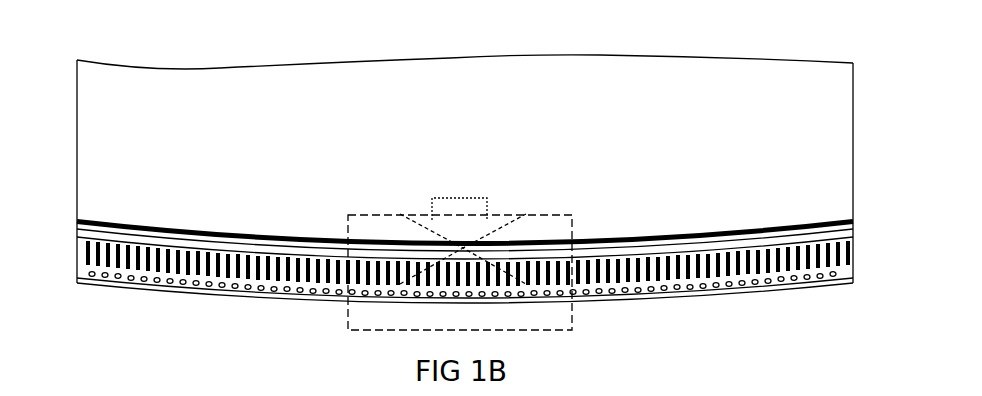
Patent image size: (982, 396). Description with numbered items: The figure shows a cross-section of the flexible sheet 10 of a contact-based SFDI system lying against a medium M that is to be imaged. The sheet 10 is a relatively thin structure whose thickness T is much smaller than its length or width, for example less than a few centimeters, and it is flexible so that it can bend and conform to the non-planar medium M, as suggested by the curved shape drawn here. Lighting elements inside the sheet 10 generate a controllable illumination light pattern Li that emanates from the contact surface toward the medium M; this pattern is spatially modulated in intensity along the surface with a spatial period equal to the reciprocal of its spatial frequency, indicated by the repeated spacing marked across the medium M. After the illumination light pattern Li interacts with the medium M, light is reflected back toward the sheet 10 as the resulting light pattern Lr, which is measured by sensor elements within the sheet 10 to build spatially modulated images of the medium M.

The medium M is at (68, 62).
The sheet 10 is at (68, 223).
The resulting light pattern Lr is at (474, 231).
The illumination light pattern Li is at (474, 293).
The thickness T is at (862, 218).